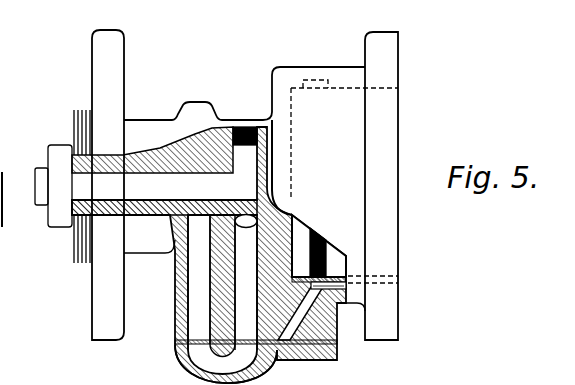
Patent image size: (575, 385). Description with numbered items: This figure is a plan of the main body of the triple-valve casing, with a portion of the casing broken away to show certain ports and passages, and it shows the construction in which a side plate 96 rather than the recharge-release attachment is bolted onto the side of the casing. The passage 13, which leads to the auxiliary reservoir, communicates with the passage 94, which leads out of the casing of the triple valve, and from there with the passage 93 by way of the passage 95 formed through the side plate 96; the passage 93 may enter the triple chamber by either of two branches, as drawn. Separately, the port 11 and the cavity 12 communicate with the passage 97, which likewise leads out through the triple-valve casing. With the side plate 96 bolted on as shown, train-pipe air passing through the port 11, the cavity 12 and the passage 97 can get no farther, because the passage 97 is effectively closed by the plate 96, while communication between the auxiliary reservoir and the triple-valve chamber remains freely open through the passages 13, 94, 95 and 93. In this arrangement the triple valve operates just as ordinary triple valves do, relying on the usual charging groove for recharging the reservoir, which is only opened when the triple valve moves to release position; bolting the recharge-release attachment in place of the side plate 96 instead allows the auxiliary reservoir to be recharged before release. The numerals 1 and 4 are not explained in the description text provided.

The wheel flange 1 is at (100, 302).
The bolt 4 is at (301, 232).
The port 11 is at (337, 258).
The cavity 12 is at (346, 287).
The passage 13 is at (164, 171).
The passage 93 is at (247, 278).
The passage 94 is at (192, 300).
The passage 95 is at (222, 295).
The side plate 96 is at (183, 368).
The passage 97 is at (298, 318).